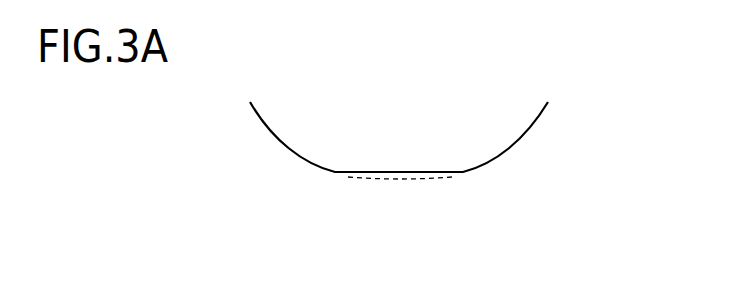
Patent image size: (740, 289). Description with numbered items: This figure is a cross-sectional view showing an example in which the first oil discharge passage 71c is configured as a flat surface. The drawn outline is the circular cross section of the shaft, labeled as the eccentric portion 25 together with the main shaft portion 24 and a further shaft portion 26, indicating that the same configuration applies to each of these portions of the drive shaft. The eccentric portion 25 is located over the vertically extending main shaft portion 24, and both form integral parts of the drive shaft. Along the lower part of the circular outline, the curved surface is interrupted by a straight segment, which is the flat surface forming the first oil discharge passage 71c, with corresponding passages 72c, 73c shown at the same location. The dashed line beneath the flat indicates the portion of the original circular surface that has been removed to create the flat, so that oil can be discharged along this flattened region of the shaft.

The eccentric portion 25 is at (322, 154).
The main shaft portion 24 is at (322, 154).
The lens 26 is at (273, 132).
The first oil discharge passage 71c is at (493, 221).
The flat portion 72c is at (493, 221).
The flat portion 73c is at (405, 176).